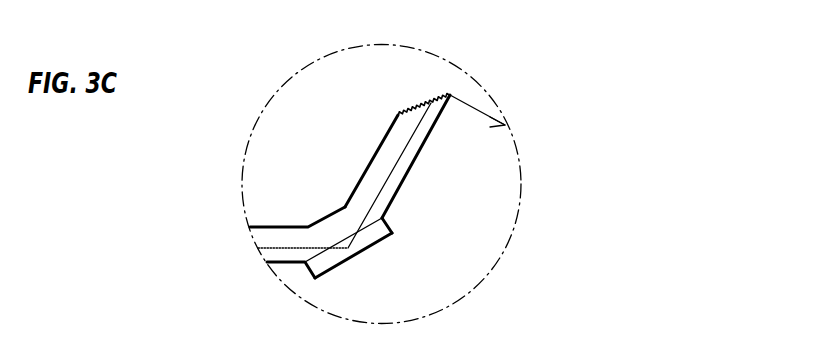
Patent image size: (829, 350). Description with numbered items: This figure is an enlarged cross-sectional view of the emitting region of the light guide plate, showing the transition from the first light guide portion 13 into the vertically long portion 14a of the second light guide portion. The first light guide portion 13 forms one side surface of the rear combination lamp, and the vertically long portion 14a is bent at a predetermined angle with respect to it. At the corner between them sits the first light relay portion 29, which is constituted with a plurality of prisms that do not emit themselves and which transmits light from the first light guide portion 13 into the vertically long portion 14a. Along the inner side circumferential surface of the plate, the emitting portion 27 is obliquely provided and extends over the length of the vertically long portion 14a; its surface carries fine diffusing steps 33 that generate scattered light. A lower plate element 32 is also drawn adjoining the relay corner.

The first light guide portion 13 is at (277, 238).
The vertically long portion 14a is at (393, 148).
The emitting portion 27 is at (439, 96).
The first light relay portion 29 is at (389, 221).
The plate portion 32 is at (382, 238).
The fine diffusing steps 33 is at (407, 112).